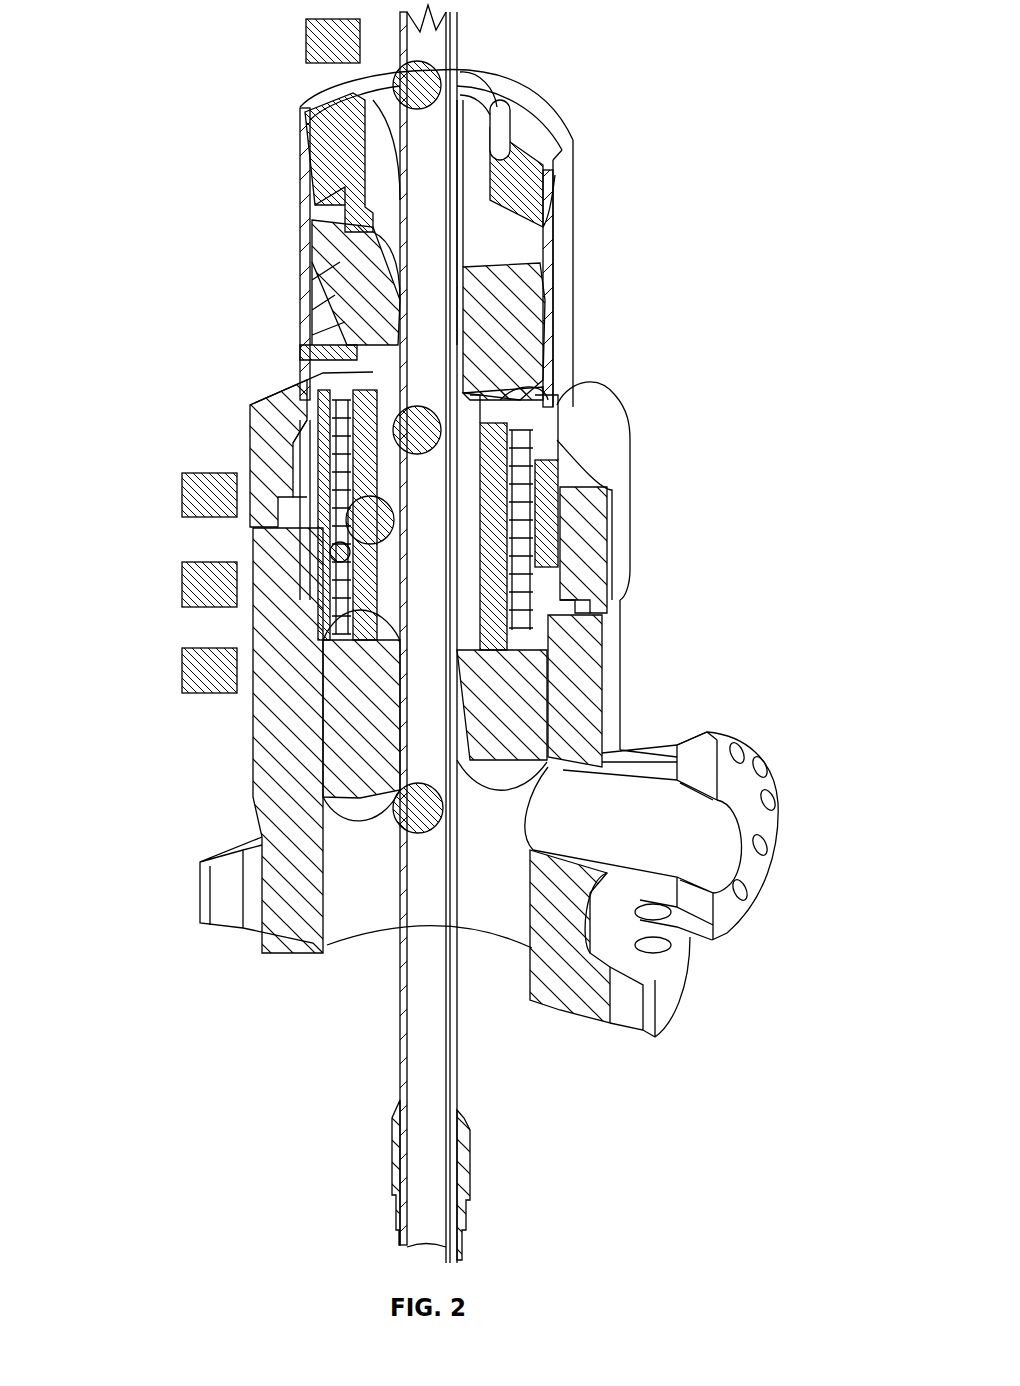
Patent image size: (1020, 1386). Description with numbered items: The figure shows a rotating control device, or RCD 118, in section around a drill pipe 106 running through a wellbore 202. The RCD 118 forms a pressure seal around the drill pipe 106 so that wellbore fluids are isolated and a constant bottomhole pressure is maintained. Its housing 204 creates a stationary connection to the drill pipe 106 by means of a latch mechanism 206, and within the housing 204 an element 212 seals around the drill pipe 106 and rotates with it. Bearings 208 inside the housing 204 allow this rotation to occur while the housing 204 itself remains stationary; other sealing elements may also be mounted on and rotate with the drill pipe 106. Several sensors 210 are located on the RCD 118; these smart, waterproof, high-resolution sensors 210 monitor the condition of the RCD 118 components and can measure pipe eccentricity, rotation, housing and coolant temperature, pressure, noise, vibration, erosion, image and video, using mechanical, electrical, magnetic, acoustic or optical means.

The RCD 118 is at (622, 48).
The sensors 210 is at (302, 41).
The housing 204 is at (549, 650).
The latch mechanism 206 is at (604, 453).
The bearings 208 is at (547, 550).
The element 212 is at (569, 419).
The drill pipe 106 is at (422, 1050).
The wellbore 202 is at (472, 1010).